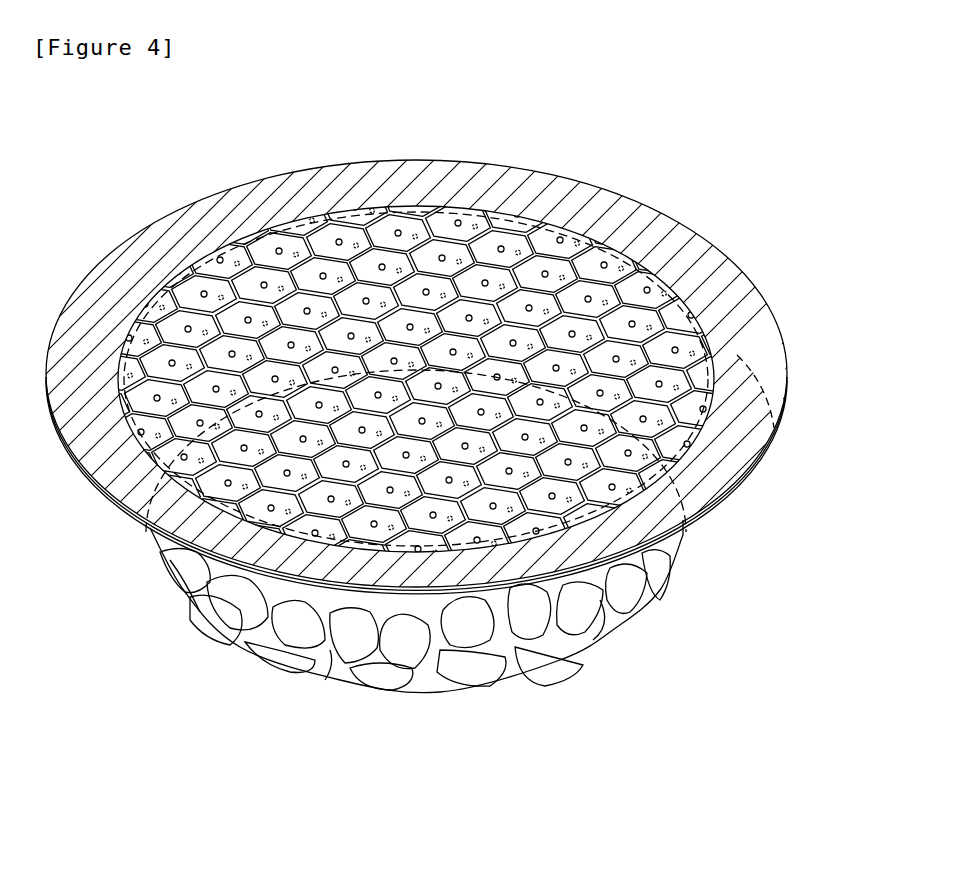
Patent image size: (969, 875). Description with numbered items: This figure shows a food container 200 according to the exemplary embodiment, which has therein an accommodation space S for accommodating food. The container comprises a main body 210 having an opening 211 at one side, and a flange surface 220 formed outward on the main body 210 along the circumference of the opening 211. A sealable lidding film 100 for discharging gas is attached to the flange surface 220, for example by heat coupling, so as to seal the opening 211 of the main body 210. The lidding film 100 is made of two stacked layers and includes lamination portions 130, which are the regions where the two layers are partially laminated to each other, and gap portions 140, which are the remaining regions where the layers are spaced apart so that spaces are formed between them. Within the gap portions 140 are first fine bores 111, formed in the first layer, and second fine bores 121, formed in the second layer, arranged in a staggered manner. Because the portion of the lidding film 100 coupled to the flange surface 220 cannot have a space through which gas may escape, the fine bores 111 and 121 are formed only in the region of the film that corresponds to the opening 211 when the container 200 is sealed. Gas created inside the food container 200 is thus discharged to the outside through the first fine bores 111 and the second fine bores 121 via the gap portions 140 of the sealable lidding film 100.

The sealable lidding film 100 is at (631, 187).
The food container 200 is at (80, 111).
The main body 210 is at (150, 537).
The opening 211 is at (200, 258).
The first fine bore 111 is at (222, 295).
The second fine bore 121 is at (201, 292).
The lamination portion 130 is at (484, 228).
The gap portion 140 is at (499, 238).
The flange surface 220 is at (713, 507).
The accommodation space S is at (437, 632).